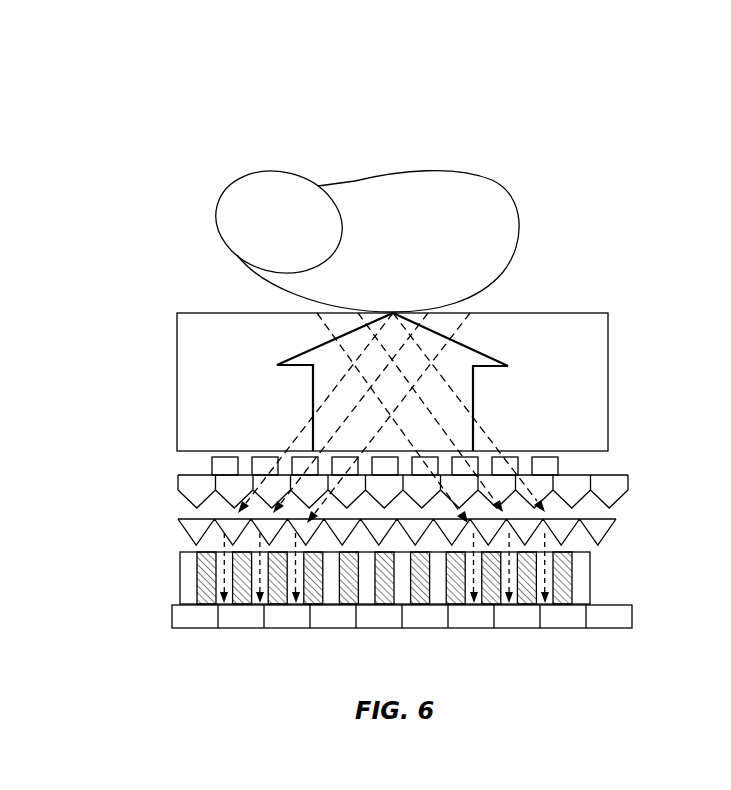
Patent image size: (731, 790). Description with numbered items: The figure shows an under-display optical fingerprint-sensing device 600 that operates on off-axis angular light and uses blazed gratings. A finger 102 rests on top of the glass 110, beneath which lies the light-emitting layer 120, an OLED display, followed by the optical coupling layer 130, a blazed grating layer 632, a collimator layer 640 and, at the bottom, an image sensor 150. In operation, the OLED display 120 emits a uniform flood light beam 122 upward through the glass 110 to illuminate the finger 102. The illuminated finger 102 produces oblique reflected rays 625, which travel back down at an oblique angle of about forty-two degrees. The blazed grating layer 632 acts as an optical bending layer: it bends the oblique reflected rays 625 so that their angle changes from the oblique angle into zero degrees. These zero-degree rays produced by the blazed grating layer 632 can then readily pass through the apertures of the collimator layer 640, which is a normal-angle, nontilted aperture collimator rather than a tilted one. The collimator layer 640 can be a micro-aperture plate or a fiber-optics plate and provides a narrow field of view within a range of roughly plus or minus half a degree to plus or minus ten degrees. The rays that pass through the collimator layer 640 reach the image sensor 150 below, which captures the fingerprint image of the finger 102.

The under-display optical fingerprint-sensing device 600 is at (160, 116).
The finger 102 is at (399, 253).
The glass 110 is at (178, 382).
The uniform flood light beam 122 is at (312, 400).
The oblique reflected rays 625 is at (370, 404).
The light-emitting layer 120 is at (198, 465).
The optical coupling layer 130 is at (643, 490).
The blazed grating layer 632 is at (628, 532).
The collimator layer 640 is at (168, 576).
The image sensor 150 is at (648, 613).